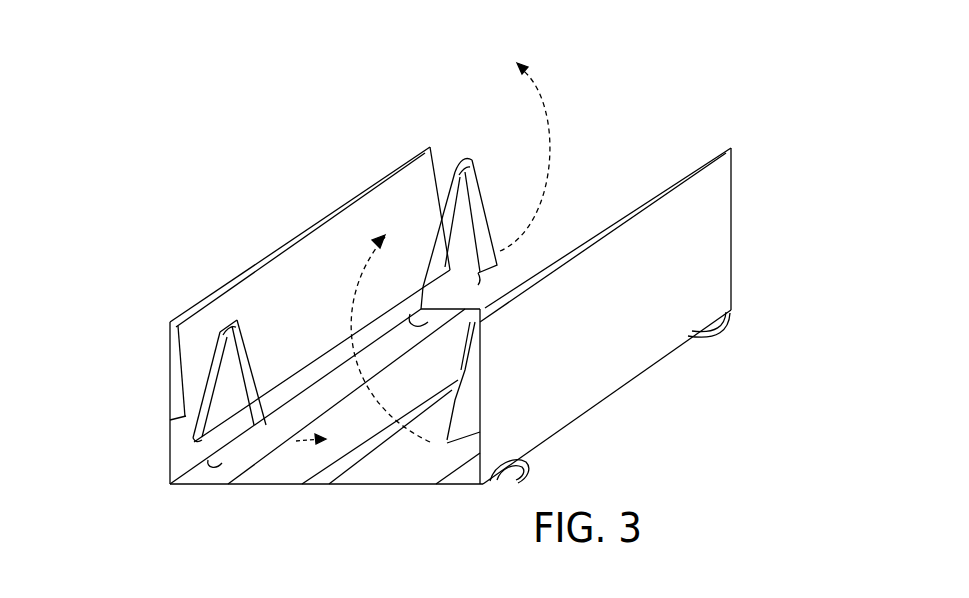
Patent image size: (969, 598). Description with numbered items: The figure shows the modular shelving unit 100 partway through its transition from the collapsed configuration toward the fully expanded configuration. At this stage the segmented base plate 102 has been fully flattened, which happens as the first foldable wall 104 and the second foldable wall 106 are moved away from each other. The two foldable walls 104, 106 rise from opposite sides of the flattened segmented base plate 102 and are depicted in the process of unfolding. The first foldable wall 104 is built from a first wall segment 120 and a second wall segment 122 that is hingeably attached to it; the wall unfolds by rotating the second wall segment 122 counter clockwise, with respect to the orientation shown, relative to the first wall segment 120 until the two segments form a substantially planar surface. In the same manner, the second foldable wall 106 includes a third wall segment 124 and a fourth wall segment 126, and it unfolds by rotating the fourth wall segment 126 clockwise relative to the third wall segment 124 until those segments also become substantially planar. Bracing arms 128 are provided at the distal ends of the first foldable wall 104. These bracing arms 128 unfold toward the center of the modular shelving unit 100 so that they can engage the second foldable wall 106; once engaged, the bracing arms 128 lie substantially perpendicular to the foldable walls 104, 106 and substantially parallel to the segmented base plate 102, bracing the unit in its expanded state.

The modular shelving unit 100 is at (744, 127).
The segmented base plate 102 is at (340, 492).
The first foldable wall 104 is at (272, 303).
The second foldable wall 106 is at (630, 323).
The first wall segment 120 is at (175, 446).
The second wall segment 122 is at (193, 347).
The third wall segment 124 is at (480, 432).
The fourth wall segment 126 is at (462, 382).
The bracing arms 128 is at (246, 396).